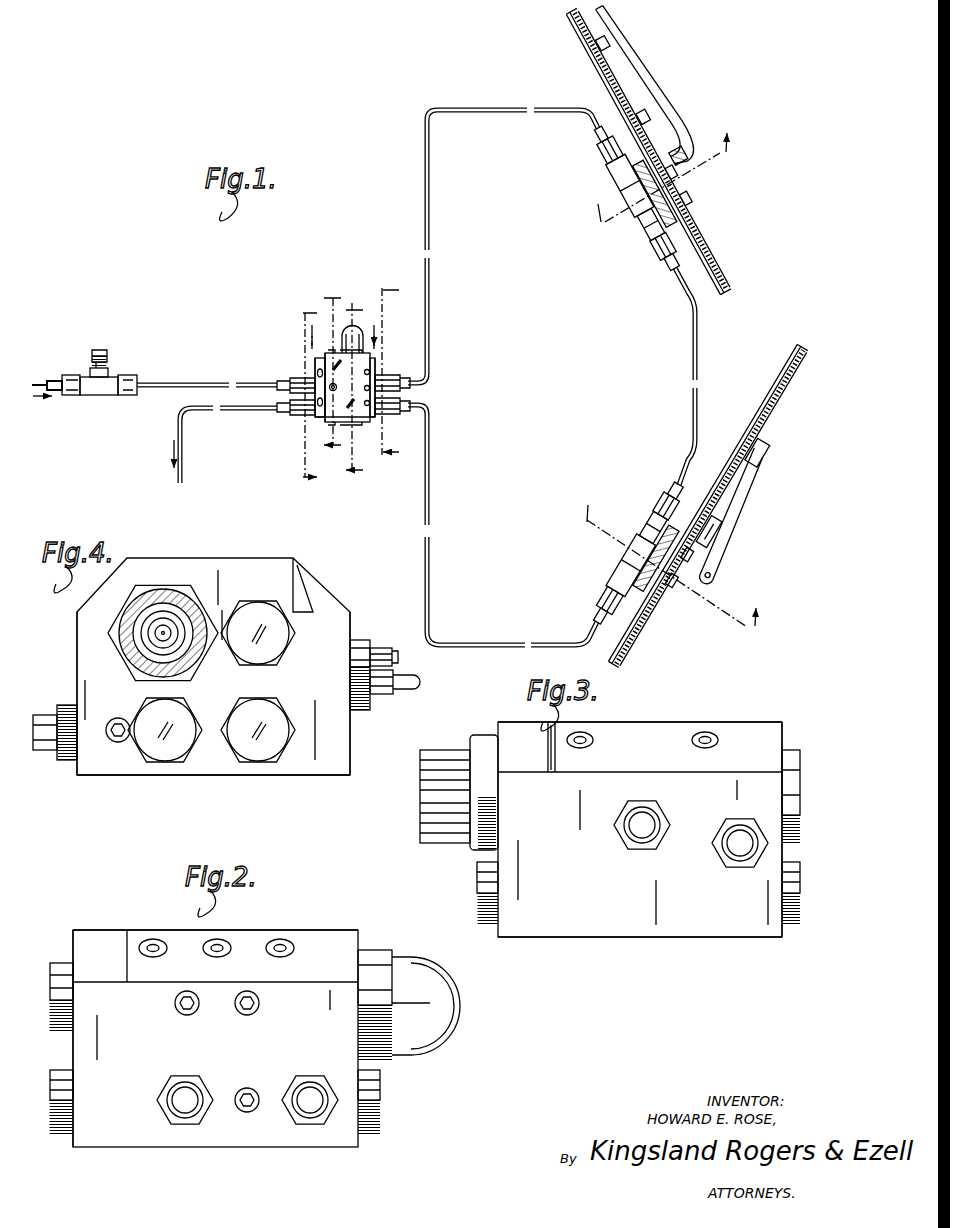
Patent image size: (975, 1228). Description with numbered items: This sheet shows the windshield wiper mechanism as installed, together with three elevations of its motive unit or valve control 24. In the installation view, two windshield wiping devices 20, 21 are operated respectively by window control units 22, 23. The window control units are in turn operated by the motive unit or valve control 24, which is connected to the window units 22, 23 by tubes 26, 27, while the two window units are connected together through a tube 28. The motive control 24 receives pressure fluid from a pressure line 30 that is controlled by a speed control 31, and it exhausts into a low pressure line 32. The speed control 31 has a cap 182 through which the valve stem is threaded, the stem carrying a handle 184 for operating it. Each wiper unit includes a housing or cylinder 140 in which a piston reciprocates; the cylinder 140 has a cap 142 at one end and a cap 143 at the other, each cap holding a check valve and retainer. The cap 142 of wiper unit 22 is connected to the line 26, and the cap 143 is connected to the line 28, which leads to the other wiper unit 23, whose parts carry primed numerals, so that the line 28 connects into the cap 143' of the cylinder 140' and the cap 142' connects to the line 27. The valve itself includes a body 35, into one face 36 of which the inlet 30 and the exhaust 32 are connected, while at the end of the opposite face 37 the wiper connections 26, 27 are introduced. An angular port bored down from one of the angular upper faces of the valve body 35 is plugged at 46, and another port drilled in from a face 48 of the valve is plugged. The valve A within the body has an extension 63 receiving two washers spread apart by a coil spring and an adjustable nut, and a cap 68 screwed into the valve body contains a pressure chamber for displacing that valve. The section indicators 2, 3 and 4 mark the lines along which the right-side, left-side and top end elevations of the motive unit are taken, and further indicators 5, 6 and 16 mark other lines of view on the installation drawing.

In FIG. 1, the section line 2— 2 is at (390, 374).
In FIG. 1, the section line 3— 3 is at (301, 398).
In FIG. 1, the section line 4— 4 is at (338, 333).
In FIG. 1, the section line 5- 5 is at (332, 372).
In FIG. 1, the section line 6- 6 is at (354, 391).
In FIG. 1, the section line 16- 16 is at (665, 394).
In FIG. 1, the windshield wiping device 20 is at (666, 100).
In FIG. 1, the windshield wiping device 21 is at (733, 537).
In FIG. 1, the window control unit 22 is at (635, 194).
In FIG. 1, the window control unit 23 is at (639, 554).
In FIG. 1, the motive unit or valve control 24 is at (367, 401).
In FIG. 4, the motive unit or valve control 24 is at (226, 687).
In FIG. 3, the motive unit or valve control 24 is at (591, 855).
In FIG. 2, the motive unit or valve control 24 is at (290, 1048).
In FIG. 1, the tube 26 is at (536, 107).
In FIG. 4, the tube 26 is at (48, 749).
In FIG. 2, the tube 26 is at (311, 1114).
In FIG. 1, the tube 27 is at (431, 538).
In FIG. 2, the tube 27 is at (185, 1114).
In FIG. 1, the tube 28 is at (690, 392).
In FIG. 1, the pressure line 30 is at (243, 378).
In FIG. 4, the pressure line 30 is at (381, 650).
In FIG. 3, the pressure line 30 is at (628, 838).
In FIG. 1, the speed control 31 is at (90, 366).
In FIG. 1, the low pressure line 32 is at (232, 412).
In FIG. 4, the low pressure line 32 is at (406, 688).
In FIG. 3, the low pressure line 32 is at (724, 861).
In FIG. 1, the valve body 35 is at (318, 424).
In FIG. 4, the valve body 35 is at (322, 768).
In FIG. 3, the valve body 35 is at (568, 928).
In FIG. 2, the valve body 35 is at (325, 942).
In FIG. 1, the face of valve body 36 is at (315, 372).
In FIG. 4, the face of valve body 36 is at (351, 748).
In FIG. 3, the face of valve body 36 is at (737, 904).
In FIG. 1, the opposite face of valve body 37 is at (378, 380).
In FIG. 4, the opposite face of valve body 37 is at (77, 672).
In FIG. 2, the opposite face of valve body 37 is at (116, 1130).
In FIG. 1, the plug 46 is at (360, 387).
In FIG. 2, the plug 46 is at (217, 942).
In FIG. 1, the face of valve body 48 is at (325, 420).
In FIG. 3, the face of valve body 48 is at (782, 731).
In FIG. 4, the valve extension 63 is at (160, 633).
In FIG. 1, the cap 68 is at (356, 330).
In FIG. 4, the cap 68 is at (130, 643).
In FIG. 3, the cap 68 is at (425, 814).
In FIG. 2, the cap 68 is at (467, 1003).
In FIG. 1, the housing or cylinder 140 is at (619, 213).
In FIG. 1, the housing or cylinder 140' is at (616, 565).
In FIG. 1, the cap 142 is at (590, 156).
In FIG. 1, the cap 142' is at (591, 598).
In FIG. 1, the cap 143 is at (649, 258).
In FIG. 1, the cap 143' is at (659, 491).
In FIG. 1, the cap 182 is at (90, 374).
In FIG. 1, the handle 184 is at (93, 357).